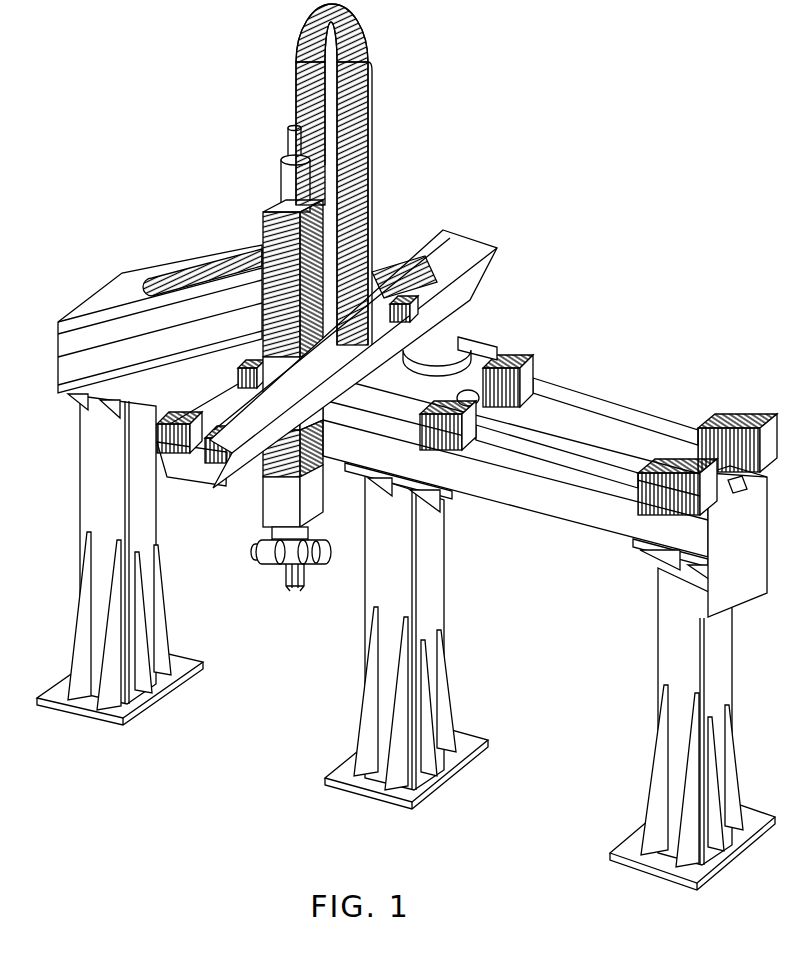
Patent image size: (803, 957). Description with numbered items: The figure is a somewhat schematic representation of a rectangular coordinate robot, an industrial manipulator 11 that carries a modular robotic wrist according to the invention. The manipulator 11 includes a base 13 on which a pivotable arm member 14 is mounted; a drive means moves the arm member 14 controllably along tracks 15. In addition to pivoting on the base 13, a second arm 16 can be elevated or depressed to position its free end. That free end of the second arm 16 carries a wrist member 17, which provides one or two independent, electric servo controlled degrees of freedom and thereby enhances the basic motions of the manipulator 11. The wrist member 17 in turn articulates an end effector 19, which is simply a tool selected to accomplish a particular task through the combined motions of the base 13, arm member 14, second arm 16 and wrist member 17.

The industrial manipulator 11 is at (407, 447).
The base 13 is at (478, 352).
The pivotable arm member 14 is at (485, 254).
The tracks 15 is at (582, 462).
The second arm 16 is at (275, 500).
The wrist member 17 is at (258, 549).
The end effector 19 is at (288, 592).